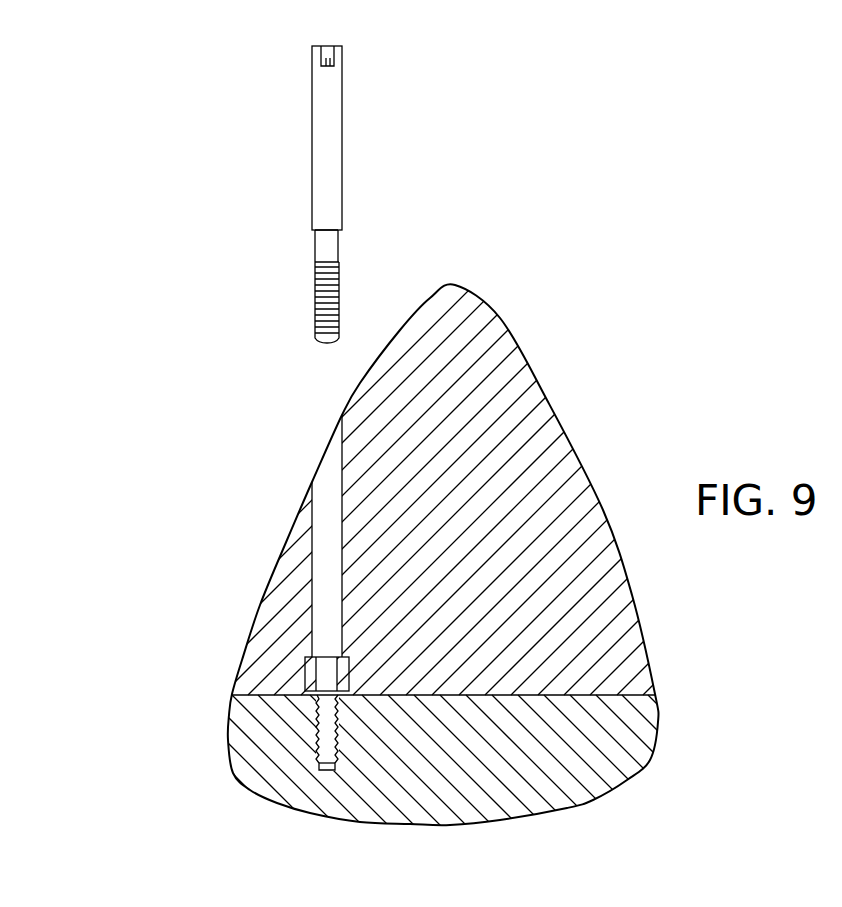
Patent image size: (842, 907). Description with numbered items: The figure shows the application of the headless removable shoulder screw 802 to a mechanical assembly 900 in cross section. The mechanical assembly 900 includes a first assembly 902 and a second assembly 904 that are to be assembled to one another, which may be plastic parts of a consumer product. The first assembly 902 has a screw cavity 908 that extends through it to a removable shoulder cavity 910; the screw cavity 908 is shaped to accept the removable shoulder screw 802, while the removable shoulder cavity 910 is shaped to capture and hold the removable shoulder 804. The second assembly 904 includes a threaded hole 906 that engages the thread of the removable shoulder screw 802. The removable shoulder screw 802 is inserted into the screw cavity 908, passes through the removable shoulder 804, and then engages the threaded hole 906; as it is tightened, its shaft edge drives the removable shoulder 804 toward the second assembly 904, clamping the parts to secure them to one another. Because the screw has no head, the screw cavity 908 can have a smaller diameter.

The headless removable shoulder screw 802 is at (283, 127).
The mechanical assembly 900 is at (453, 555).
The first assembly 902 is at (615, 600).
The second assembly 904 is at (620, 753).
The screw cavity 908 is at (327, 552).
The removable shoulder 804 is at (310, 668).
The removable shoulder cavity 910 is at (312, 698).
The threaded hole 906 is at (332, 750).